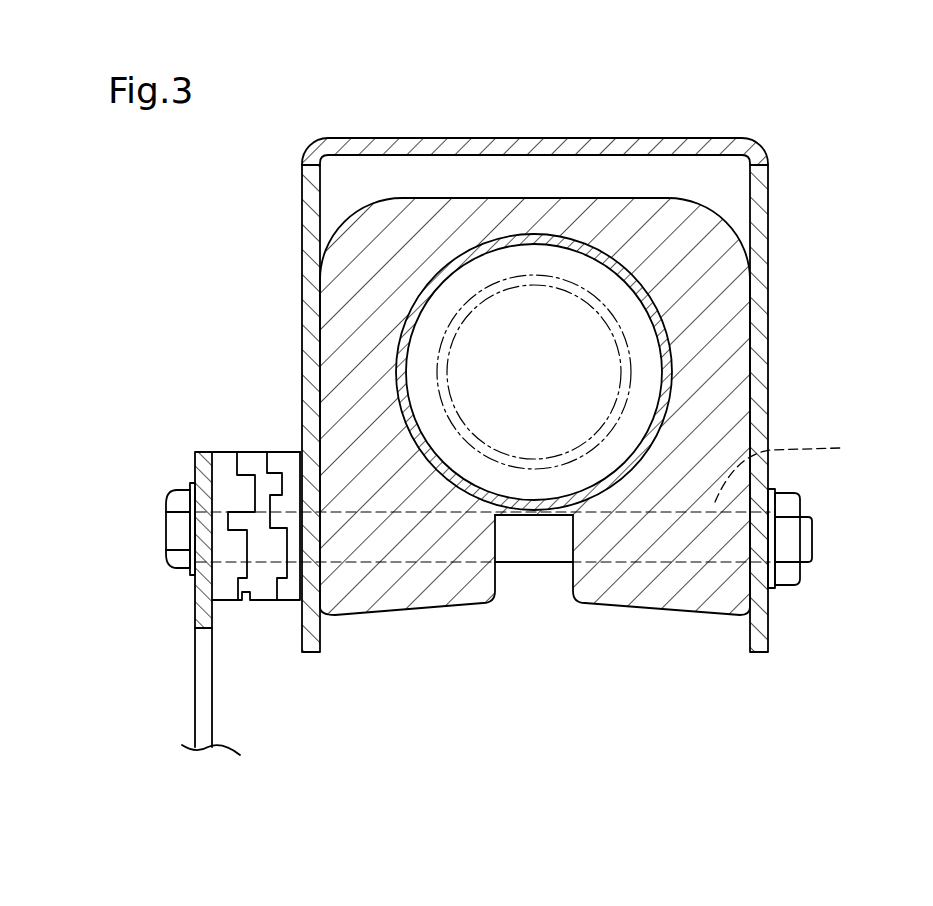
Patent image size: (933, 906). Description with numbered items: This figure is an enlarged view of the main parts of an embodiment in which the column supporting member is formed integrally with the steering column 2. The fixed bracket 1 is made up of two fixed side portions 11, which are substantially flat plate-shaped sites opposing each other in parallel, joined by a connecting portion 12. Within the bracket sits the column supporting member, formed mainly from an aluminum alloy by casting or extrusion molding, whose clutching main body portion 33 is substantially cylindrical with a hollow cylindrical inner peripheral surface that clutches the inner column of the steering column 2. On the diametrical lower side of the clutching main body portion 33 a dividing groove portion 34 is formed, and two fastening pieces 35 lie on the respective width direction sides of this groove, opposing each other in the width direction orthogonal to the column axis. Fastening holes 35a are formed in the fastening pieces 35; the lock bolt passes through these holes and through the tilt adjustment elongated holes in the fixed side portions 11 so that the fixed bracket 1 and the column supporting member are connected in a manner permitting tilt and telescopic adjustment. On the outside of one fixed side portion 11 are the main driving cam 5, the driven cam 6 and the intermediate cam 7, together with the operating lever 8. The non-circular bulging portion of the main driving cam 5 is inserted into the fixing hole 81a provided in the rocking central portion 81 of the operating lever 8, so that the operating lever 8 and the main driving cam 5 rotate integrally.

The fixed bracket 1 is at (561, 361).
The steering column 2 is at (447, 267).
The main driving cam 5 is at (222, 450).
The driven cam 6 is at (290, 450).
The intermediate cam 7 is at (255, 603).
The operating lever 8 is at (190, 656).
The fixed side portion 11 is at (302, 325).
The connecting portion 12 is at (630, 138).
The clutching main body portion 33 is at (609, 401).
The dividing groove portion 34 is at (548, 582).
The fastening piece 35 is at (405, 585).
The fastening hole 35a is at (806, 468).
The rocking central portion 81 is at (149, 518).
The fixing hole 81a is at (203, 552).